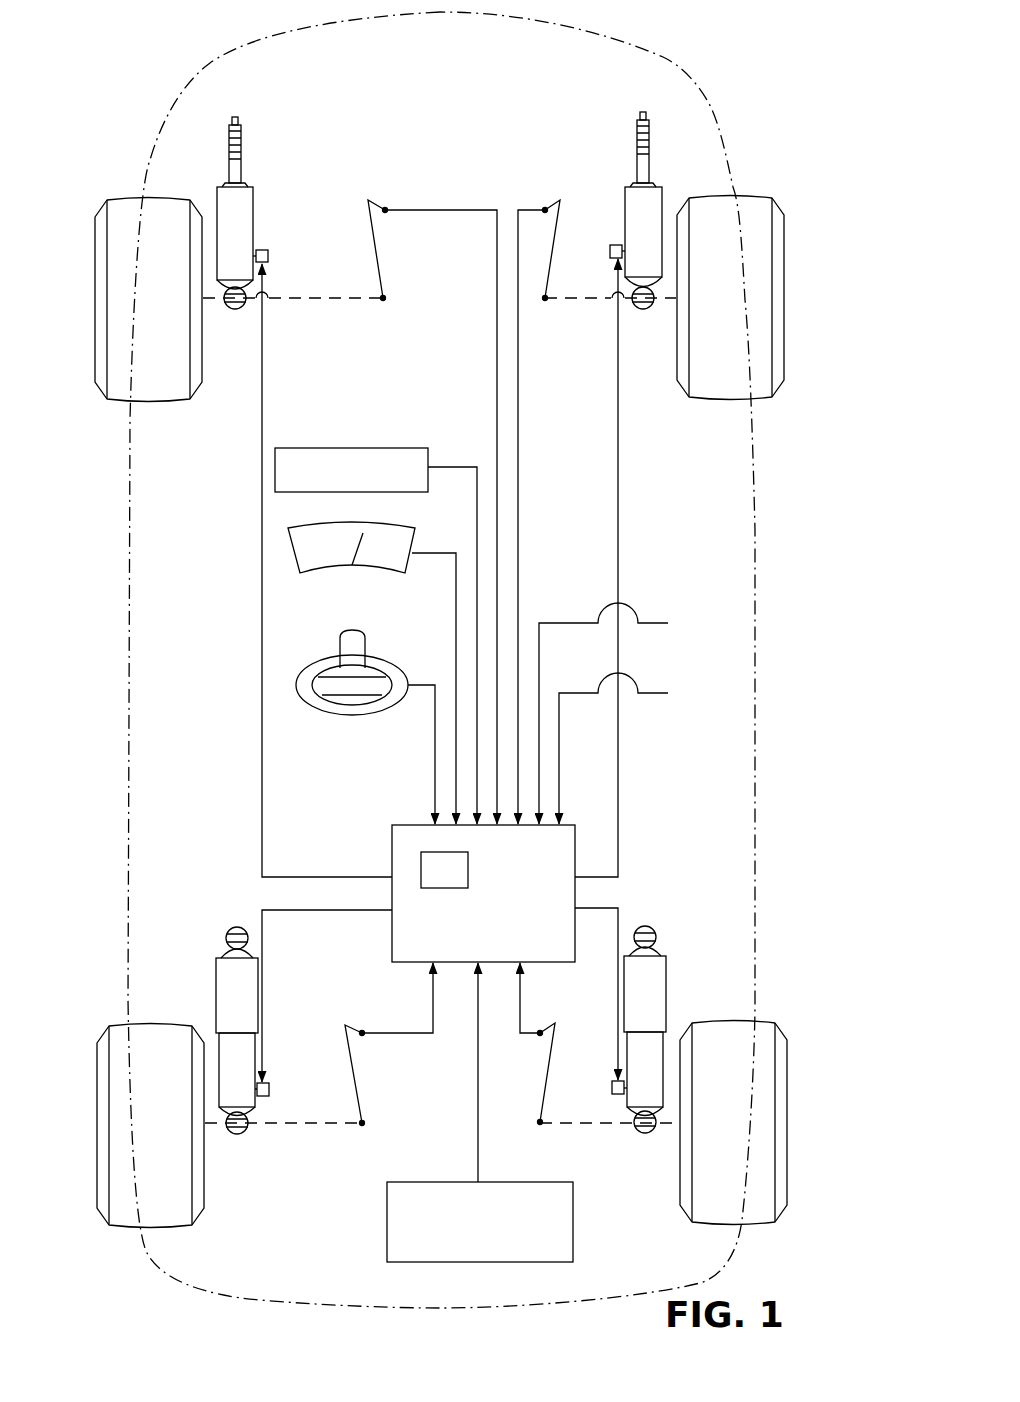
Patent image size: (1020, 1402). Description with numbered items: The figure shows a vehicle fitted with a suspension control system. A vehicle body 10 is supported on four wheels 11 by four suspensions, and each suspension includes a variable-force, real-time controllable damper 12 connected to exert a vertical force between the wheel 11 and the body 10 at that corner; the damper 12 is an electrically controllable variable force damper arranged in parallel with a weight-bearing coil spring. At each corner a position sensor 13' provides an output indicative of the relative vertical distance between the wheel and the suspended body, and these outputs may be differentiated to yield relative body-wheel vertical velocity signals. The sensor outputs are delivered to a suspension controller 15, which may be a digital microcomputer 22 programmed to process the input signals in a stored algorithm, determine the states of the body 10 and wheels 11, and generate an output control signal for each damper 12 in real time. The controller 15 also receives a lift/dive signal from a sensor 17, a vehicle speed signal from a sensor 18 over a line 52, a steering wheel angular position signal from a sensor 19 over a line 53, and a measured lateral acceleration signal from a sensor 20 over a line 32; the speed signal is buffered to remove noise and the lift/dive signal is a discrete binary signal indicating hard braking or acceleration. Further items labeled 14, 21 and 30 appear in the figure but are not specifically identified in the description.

The vehicle body 10 is at (684, 58).
The wheels 11 is at (123, 215).
The variable-force controllable damper 12 is at (250, 200).
The position sensor 13' is at (451, 634).
The lateral acceleration sensor 14 is at (385, 1217).
The suspension controller 15 is at (565, 857).
The lift/dive sensor 17 is at (378, 448).
The vehicle speed sensor 18 is at (310, 530).
The steering wheel angular position sensor 19 is at (315, 668).
The lateral acceleration sensor 20 is at (645, 620).
The battery voltage input 21 is at (650, 695).
The digital microcomputer 22 is at (420, 870).
The actuator control lines 30 is at (262, 782).
The lateral acceleration signal line 32 is at (478, 1142).
The vehicle speed signal line 52 is at (422, 545).
The steering angle signal line 53 is at (408, 683).